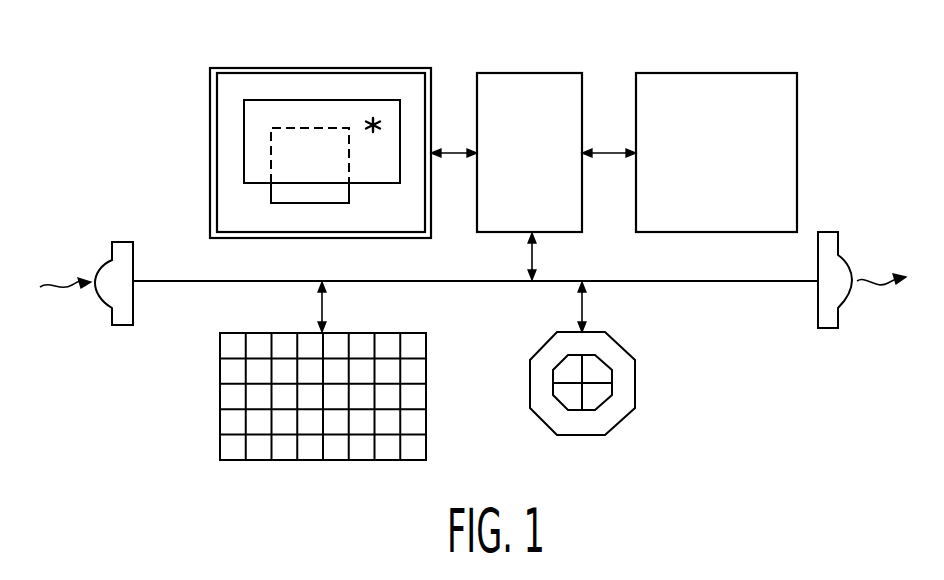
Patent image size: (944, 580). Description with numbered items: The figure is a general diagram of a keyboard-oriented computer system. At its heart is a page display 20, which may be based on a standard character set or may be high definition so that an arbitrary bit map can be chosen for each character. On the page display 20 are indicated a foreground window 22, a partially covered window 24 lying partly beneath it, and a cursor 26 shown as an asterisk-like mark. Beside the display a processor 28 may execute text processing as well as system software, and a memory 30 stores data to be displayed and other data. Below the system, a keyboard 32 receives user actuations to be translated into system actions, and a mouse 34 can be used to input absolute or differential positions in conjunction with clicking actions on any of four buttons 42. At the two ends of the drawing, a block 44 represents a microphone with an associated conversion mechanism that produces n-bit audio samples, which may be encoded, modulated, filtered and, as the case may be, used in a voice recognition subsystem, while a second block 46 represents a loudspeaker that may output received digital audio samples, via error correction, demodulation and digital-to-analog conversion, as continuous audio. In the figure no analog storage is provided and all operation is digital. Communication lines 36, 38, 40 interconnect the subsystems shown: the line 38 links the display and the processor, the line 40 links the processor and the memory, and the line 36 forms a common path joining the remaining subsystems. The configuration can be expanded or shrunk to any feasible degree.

The page display 20 is at (223, 240).
The foreground window 22 is at (244, 173).
The partially covered window 24 is at (275, 205).
The cursor 26 is at (375, 117).
The processor 28 is at (530, 72).
The memory 30 is at (687, 72).
The keyboard 32 is at (308, 461).
The mouse 34 is at (540, 418).
The communication line 36 is at (475, 282).
The communication line 38 is at (455, 158).
The communication line 40 is at (605, 158).
The buttons 42 is at (602, 402).
The block representing a microphone 44 is at (122, 326).
The second block representing a loudspeaker 46 is at (830, 330).